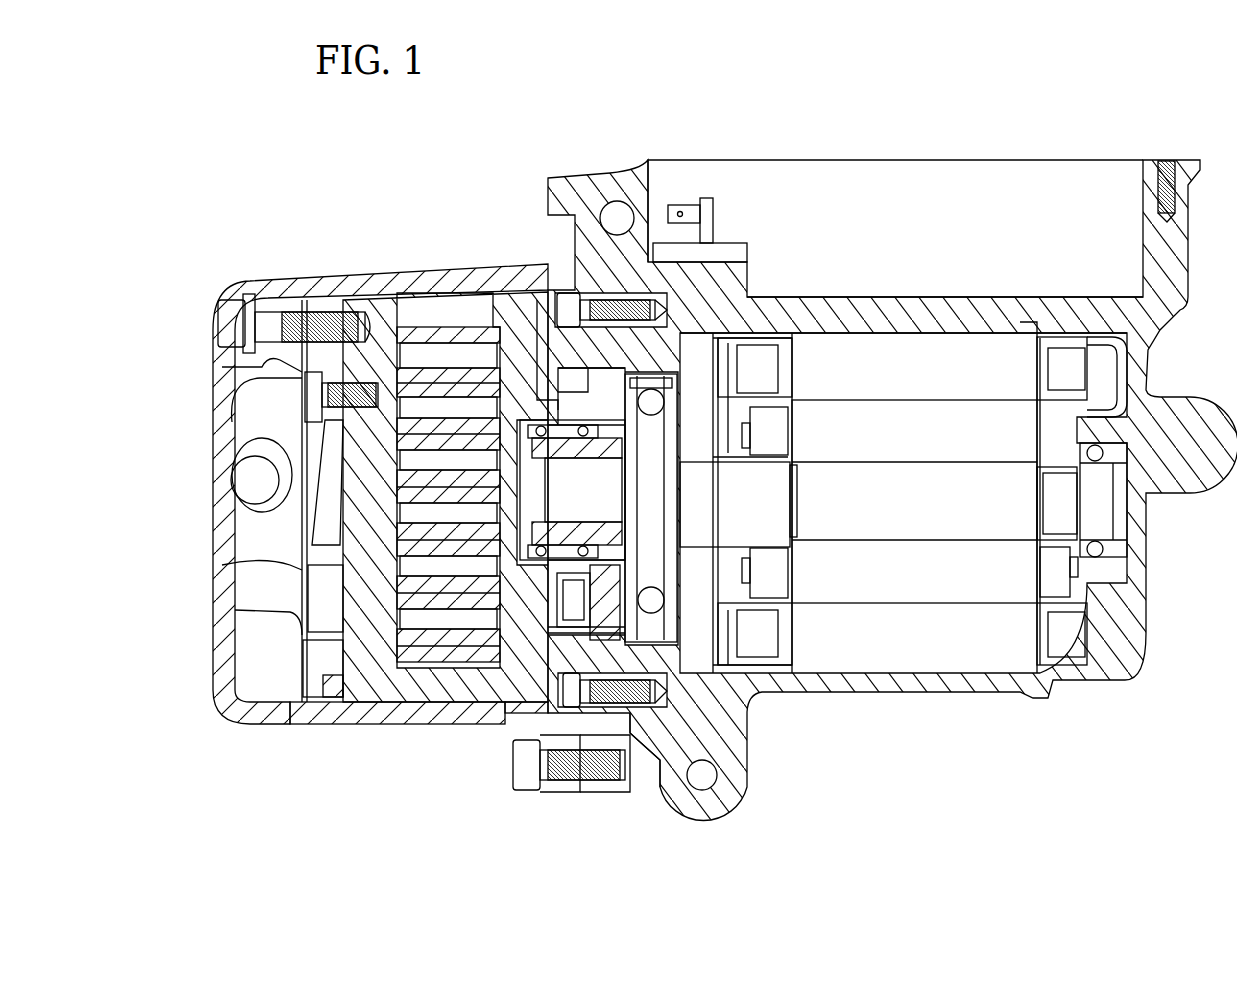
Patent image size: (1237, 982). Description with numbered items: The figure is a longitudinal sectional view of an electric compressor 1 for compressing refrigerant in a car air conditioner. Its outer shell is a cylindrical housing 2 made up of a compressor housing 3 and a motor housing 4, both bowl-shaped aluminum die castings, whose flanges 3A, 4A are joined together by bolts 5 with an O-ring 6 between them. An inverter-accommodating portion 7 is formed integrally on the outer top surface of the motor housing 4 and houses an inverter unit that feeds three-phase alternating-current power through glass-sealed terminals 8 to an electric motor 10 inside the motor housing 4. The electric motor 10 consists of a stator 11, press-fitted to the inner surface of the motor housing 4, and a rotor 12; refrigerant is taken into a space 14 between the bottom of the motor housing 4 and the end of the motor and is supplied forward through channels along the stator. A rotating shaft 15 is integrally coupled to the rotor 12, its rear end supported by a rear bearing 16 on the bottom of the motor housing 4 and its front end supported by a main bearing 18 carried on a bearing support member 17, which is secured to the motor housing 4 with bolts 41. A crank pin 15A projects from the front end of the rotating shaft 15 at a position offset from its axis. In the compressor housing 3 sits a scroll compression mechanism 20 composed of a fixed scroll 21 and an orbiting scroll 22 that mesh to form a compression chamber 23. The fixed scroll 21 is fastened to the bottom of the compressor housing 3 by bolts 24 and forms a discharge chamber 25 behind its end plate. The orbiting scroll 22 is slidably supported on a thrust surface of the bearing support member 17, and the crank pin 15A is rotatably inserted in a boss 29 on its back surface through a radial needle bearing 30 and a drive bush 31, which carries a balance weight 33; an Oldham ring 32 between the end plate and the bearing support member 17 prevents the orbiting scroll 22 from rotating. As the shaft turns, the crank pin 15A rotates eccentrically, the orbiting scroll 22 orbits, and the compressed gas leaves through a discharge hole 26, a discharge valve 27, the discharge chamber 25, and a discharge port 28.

The electric compressor 1 is at (582, 135).
The housing 2 is at (386, 262).
The compressor housing 3 is at (310, 712).
The flange 3A is at (560, 795).
The motor housing 4 is at (966, 690).
The flange 4A is at (626, 795).
The bolts 5 is at (512, 762).
The O-ring 6 is at (624, 738).
The inverter-accommodating portion 7 is at (948, 180).
The glass-sealed terminals 8 is at (748, 250).
The electric motor 10 is at (892, 660).
The stator 11 is at (978, 335).
The rotor 12 is at (920, 412).
The space 14 is at (1110, 383).
The rotating shaft 15 is at (966, 530).
The crank pin 15A is at (605, 470).
The rear bearing 16 is at (1113, 567).
The bearing support member 17 is at (552, 338).
The main bearing 18 is at (680, 622).
The scroll compression mechanism 20 is at (427, 690).
The fixed scroll 21 is at (330, 356).
The orbiting scroll 22 is at (505, 655).
The compression chamber 23 is at (425, 353).
The bolts 24 is at (275, 305).
The discharge chamber 25 is at (245, 545).
The discharge hole 26 is at (343, 545).
The discharge valve 27 is at (340, 548).
The discharge port 28 is at (252, 478).
The boss 29 is at (604, 366).
The radial needle bearing 30 is at (598, 548).
The drive bush 31 is at (612, 523).
The Oldham ring 32 is at (503, 338).
The balance weight 33 is at (560, 672).
The bolts 41 is at (625, 297).